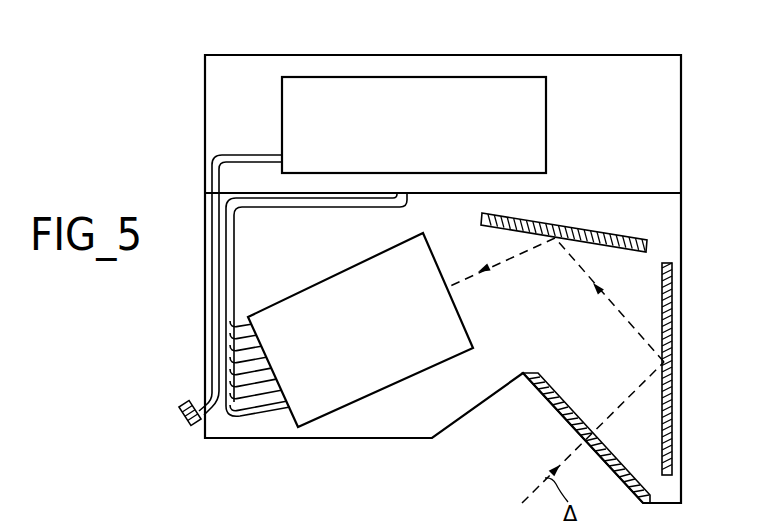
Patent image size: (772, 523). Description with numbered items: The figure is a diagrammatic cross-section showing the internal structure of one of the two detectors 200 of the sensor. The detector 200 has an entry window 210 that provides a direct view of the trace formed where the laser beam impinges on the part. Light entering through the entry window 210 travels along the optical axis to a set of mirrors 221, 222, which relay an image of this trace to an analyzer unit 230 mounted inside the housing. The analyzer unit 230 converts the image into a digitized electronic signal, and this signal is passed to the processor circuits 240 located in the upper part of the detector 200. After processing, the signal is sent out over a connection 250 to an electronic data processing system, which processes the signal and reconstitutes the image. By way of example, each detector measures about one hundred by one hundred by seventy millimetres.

The detector 200 is at (196, 50).
The entry window 210 is at (550, 405).
The mirror 221 is at (678, 382).
The mirror 222 is at (654, 234).
The analyzer unit 230 is at (415, 366).
The circuits 240 is at (491, 93).
The connection 250 is at (214, 328).